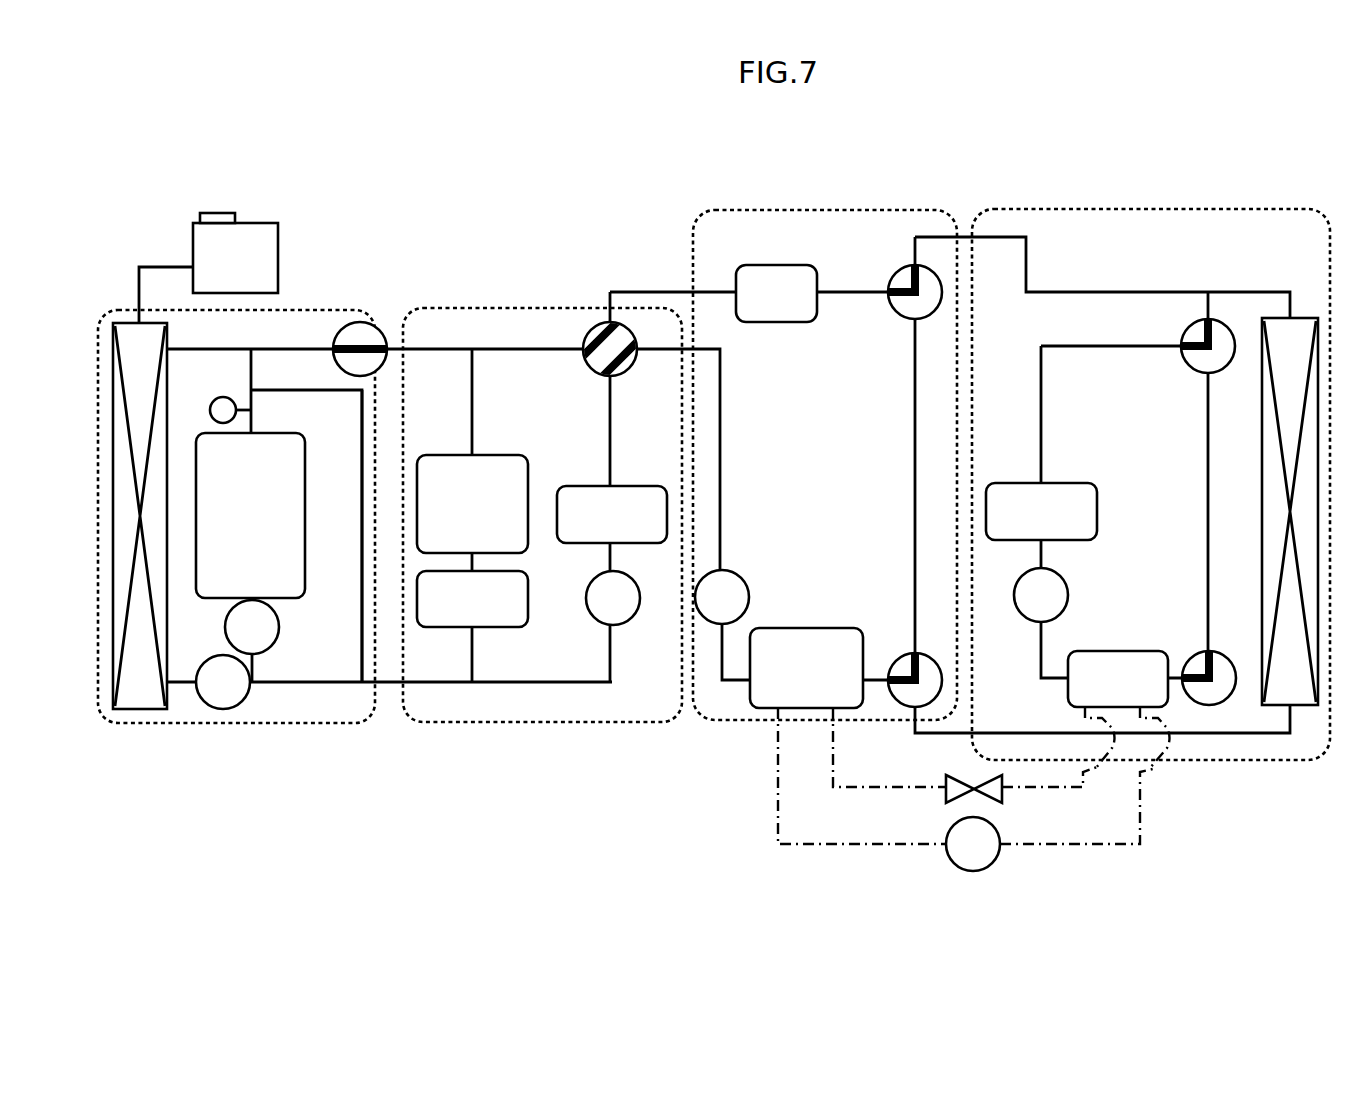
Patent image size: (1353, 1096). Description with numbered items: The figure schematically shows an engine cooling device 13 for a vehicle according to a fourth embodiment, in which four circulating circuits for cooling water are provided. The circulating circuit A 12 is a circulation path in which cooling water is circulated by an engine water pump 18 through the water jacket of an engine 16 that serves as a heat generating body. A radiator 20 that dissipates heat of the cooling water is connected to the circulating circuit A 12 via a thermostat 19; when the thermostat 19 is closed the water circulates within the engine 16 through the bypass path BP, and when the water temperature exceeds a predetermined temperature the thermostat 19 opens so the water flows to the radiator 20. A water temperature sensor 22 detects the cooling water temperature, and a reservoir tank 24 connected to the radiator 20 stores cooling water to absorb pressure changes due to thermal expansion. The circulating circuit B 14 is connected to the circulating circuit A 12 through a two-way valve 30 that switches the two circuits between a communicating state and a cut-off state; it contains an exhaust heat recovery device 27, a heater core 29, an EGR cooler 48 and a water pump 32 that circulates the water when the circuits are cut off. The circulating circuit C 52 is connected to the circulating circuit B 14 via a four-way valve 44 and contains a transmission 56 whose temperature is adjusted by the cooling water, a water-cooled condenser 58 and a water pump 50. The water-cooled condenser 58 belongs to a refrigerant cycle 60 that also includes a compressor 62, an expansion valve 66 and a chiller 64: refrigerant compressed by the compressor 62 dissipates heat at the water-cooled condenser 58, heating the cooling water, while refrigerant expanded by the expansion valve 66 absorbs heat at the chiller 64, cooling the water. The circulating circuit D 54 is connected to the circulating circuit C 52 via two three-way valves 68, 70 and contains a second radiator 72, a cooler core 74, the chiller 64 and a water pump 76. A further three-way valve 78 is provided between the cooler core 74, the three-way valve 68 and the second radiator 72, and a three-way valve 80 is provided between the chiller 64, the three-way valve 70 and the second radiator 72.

The circulating circuit A 12 is at (334, 310).
The engine cooling device 13 is at (587, 196).
The circulating circuit B 14 is at (520, 308).
The engine 16 is at (306, 450).
The engine water pump 18 is at (280, 627).
The thermostat 19 is at (250, 699).
The radiator 20 is at (168, 603).
The water temperature sensor 22 is at (214, 398).
The reservoir tank 24 is at (280, 237).
The exhaust heat recovery device 27 is at (505, 455).
The heater core 29 is at (630, 486).
The two-way valve 30 is at (380, 325).
The water pump 32 is at (593, 616).
The four-way valve 44 is at (588, 368).
The EGR cooler 48 is at (528, 597).
The water pump 50 is at (742, 576).
The circulating circuit C 52 is at (918, 210).
The circulating circuit D 54 is at (1296, 209).
The transmission 56 is at (778, 322).
The water-cooled condenser 58 is at (806, 628).
The refrigerant cycle 60 is at (778, 768).
The compressor 62 is at (997, 830).
The chiller 64 is at (1110, 651).
The expansion valve 66 is at (947, 779).
The three-way valve 68 is at (895, 313).
The three-way valve 70 is at (895, 660).
The second radiator 72 is at (1298, 318).
The cooler core 74 is at (1074, 483).
The water pump 76 is at (1068, 586).
The three-way valve 78 is at (1190, 367).
The three-way valve 80 is at (1195, 655).
The bypass path BP is at (362, 480).